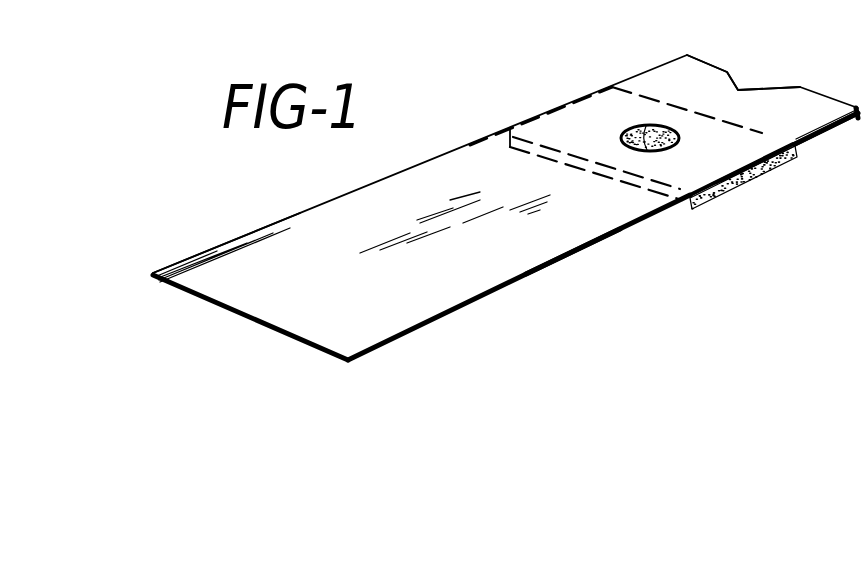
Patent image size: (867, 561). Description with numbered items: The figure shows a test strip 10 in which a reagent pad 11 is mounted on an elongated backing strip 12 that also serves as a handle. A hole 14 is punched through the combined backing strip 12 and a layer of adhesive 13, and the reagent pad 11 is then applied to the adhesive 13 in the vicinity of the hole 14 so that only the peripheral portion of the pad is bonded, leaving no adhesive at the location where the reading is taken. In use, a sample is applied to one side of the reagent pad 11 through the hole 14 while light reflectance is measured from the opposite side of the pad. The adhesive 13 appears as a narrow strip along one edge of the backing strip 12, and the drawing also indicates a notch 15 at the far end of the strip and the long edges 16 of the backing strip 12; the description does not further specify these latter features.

The slide assembly 10 is at (206, 241).
The edge strip 11 is at (791, 152).
The plate body 12 is at (283, 337).
The strip face 13 is at (741, 180).
The aperture 14 is at (633, 125).
The notch 15 is at (740, 83).
The edge 16 is at (300, 213).